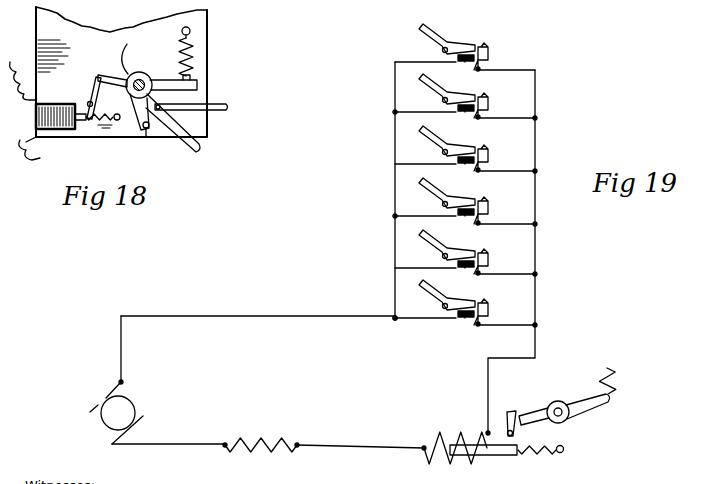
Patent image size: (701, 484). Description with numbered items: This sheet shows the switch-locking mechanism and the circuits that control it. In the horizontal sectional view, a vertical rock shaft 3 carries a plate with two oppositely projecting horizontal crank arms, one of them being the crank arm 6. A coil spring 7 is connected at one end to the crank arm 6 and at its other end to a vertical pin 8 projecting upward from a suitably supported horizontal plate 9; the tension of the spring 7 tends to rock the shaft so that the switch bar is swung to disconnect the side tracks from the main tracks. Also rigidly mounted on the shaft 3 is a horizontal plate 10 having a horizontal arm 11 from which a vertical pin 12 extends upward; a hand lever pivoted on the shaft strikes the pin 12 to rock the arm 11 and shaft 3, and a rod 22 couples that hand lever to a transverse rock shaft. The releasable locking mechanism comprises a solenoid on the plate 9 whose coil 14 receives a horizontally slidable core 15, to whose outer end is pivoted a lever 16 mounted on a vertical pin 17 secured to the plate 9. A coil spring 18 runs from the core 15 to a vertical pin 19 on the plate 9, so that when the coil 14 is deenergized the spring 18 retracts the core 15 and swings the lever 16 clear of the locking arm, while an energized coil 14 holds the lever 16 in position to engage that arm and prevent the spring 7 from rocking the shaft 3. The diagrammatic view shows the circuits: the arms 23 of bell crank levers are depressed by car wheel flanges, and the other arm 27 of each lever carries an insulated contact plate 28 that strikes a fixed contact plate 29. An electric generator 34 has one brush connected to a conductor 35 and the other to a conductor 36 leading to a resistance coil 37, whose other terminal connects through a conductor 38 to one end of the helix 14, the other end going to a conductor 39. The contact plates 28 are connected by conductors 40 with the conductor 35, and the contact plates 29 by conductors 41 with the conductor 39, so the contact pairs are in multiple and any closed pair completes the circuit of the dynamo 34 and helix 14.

In FIG. 18, the rock shaft 3 is at (140, 80).
In FIG. 19, the rock shaft 3 is at (559, 407).
In FIG. 18, the crank arm 6 is at (173, 75).
In FIG. 19, the crank arm 6 is at (591, 400).
In FIG. 18, the coil spring 7 is at (192, 60).
In FIG. 19, the coil spring 7 is at (610, 368).
In FIG. 18, the vertical pin 8 is at (191, 29).
In FIG. 18, the horizontal plate 9 is at (80, 43).
In FIG. 18, the horizontal plate 10 is at (130, 52).
In FIG. 18, the horizontal arm 11 is at (166, 130).
In FIG. 18, the vertical pin 12 is at (145, 129).
In FIG. 18, the coil 14 is at (52, 104).
In FIG. 19, the coil 14 is at (447, 432).
In FIG. 18, the core 15 is at (78, 121).
In FIG. 19, the core 15 is at (500, 442).
In FIG. 18, the lever 16 is at (88, 86).
In FIG. 19, the lever 16 is at (515, 412).
In FIG. 18, the vertical pin 17 is at (87, 98).
In FIG. 19, the vertical pin 17 is at (508, 448).
In FIG. 18, the coil spring 18 is at (97, 121).
In FIG. 19, the coil spring 18 is at (537, 440).
In FIG. 18, the vertical pin 19 is at (117, 120).
In FIG. 19, the vertical pin 19 is at (563, 446).
In FIG. 18, the rod 22 is at (224, 103).
In FIG. 19, the arm 23 is at (447, 160).
In FIG. 19, the arm 27 is at (463, 314).
In FIG. 19, the contact plate 28 is at (462, 318).
In FIG. 19, the contact plate 29 is at (490, 314).
In FIG. 19, the electric generator 34 is at (134, 398).
In FIG. 19, the conductor 35 is at (259, 307).
In FIG. 19, the conductor 36 is at (169, 436).
In FIG. 19, the resistance coil 37 is at (258, 438).
In FIG. 18, the conductor 38 is at (22, 72).
In FIG. 19, the conductor 38 is at (343, 446).
In FIG. 18, the conductor 39 is at (33, 151).
In FIG. 19, the conductor 39 is at (488, 378).
In FIG. 19, the conductors 40 is at (395, 318).
In FIG. 19, the conductors 41 is at (516, 325).